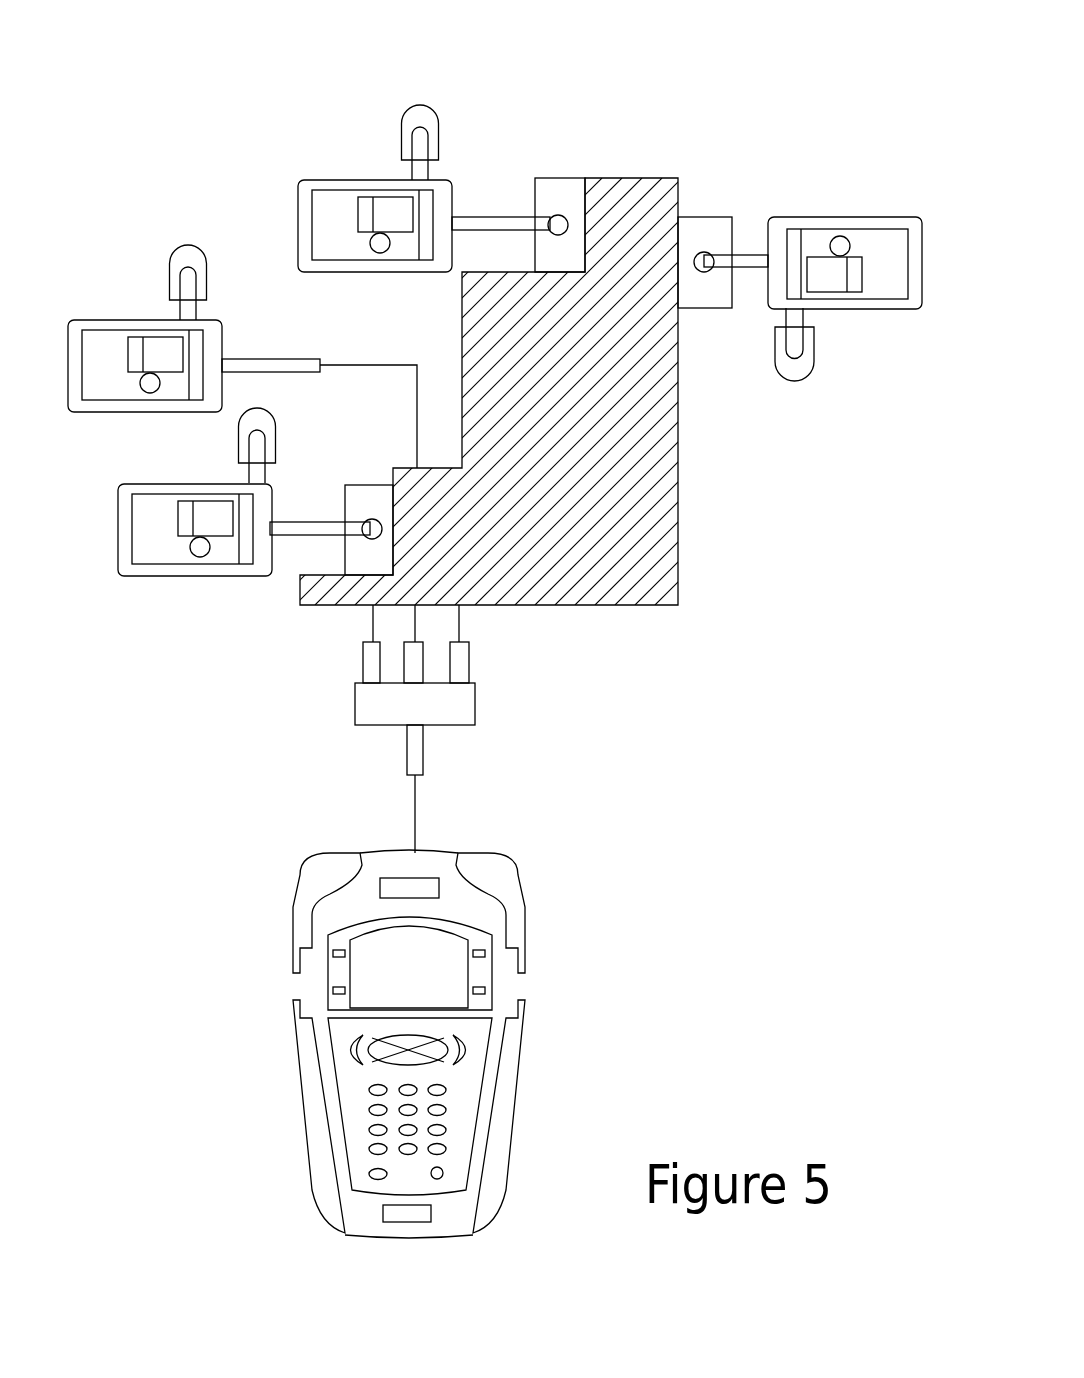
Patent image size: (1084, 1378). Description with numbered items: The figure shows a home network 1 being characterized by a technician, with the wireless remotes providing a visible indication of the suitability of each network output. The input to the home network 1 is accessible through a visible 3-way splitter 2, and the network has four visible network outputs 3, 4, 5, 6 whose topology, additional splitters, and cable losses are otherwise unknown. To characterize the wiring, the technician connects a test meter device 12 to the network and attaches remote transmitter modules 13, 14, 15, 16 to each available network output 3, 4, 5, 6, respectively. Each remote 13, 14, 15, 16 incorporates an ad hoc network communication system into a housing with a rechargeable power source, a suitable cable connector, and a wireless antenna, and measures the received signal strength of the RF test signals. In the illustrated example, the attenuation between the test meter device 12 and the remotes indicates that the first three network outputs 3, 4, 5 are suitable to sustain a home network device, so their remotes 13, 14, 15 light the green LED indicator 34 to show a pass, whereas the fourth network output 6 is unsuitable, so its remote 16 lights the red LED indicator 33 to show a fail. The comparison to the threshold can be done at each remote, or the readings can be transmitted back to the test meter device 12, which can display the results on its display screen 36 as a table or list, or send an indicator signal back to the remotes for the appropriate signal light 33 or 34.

The home network 1 is at (220, 167).
The 3-way splitter 2 is at (355, 707).
The network output 3 is at (362, 536).
The network output 4 is at (420, 468).
The network output 5 is at (558, 215).
The network output 6 is at (704, 272).
The test meter device 12 is at (449, 1023).
The remote transmitter module 13 is at (193, 576).
The remote transmitter module 14 is at (100, 320).
The remote transmitter module 15 is at (375, 180).
The remote transmitter module 16 is at (882, 309).
The red LED indicator 33 is at (795, 381).
The green LED indicator 34 is at (420, 105).
The display screen 36 is at (440, 972).